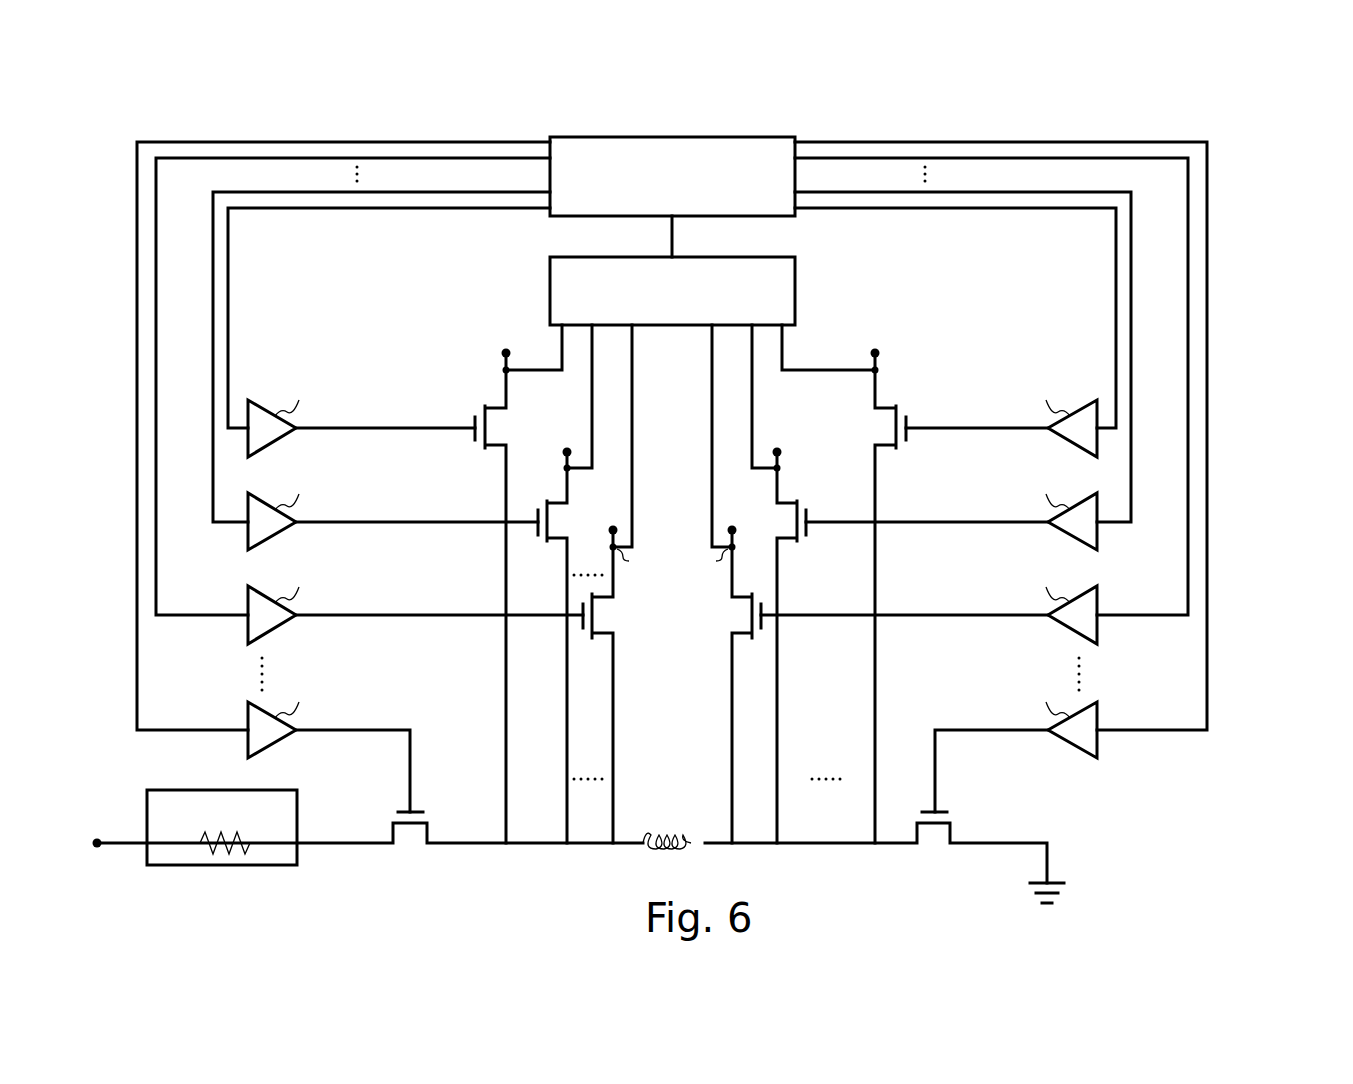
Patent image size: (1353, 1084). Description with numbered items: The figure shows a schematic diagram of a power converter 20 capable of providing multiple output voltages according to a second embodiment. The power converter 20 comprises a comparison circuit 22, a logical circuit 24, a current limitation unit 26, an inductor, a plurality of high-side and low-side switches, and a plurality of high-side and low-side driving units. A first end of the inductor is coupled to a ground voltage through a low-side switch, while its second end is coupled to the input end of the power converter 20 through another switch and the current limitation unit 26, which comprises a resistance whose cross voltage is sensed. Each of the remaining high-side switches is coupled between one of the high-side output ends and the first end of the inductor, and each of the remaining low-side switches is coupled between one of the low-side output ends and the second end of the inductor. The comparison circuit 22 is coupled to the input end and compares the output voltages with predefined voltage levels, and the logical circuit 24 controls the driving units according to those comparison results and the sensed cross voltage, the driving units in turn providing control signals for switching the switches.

The power converter 20 is at (1225, 148).
The comparison circuit 22 is at (797, 291).
The logical circuit 24 is at (672, 137).
The current limitation unit 26 is at (222, 866).